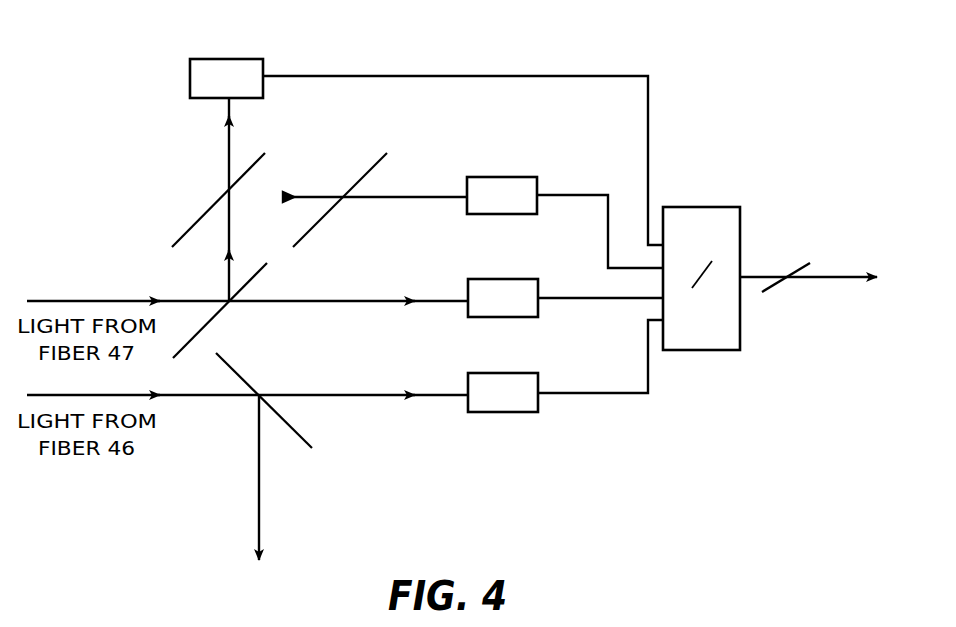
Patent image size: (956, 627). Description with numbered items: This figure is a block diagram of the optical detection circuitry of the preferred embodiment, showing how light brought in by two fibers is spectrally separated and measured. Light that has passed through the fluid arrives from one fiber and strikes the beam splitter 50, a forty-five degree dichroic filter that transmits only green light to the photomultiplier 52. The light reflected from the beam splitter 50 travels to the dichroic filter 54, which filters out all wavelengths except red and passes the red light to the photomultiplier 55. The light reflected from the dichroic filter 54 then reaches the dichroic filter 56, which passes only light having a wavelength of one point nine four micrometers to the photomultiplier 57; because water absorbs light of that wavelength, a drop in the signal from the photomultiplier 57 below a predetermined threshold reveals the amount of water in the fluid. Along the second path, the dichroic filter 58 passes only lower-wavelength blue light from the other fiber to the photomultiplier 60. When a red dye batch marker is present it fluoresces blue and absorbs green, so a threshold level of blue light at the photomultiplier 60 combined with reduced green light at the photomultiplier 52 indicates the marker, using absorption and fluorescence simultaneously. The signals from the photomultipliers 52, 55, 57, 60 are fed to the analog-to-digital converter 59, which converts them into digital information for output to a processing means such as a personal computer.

The beam splitter 50 is at (256, 275).
The photomultiplier 52 is at (521, 278).
The dichroic filter 54 is at (258, 163).
The photomultiplier 55 is at (237, 58).
The dichroic filter 56 is at (377, 165).
The photomultiplier 57 is at (521, 176).
The dichroic filter 58 is at (238, 368).
The analog-to-digital converter 59 is at (686, 206).
The photomultiplier 60 is at (521, 372).